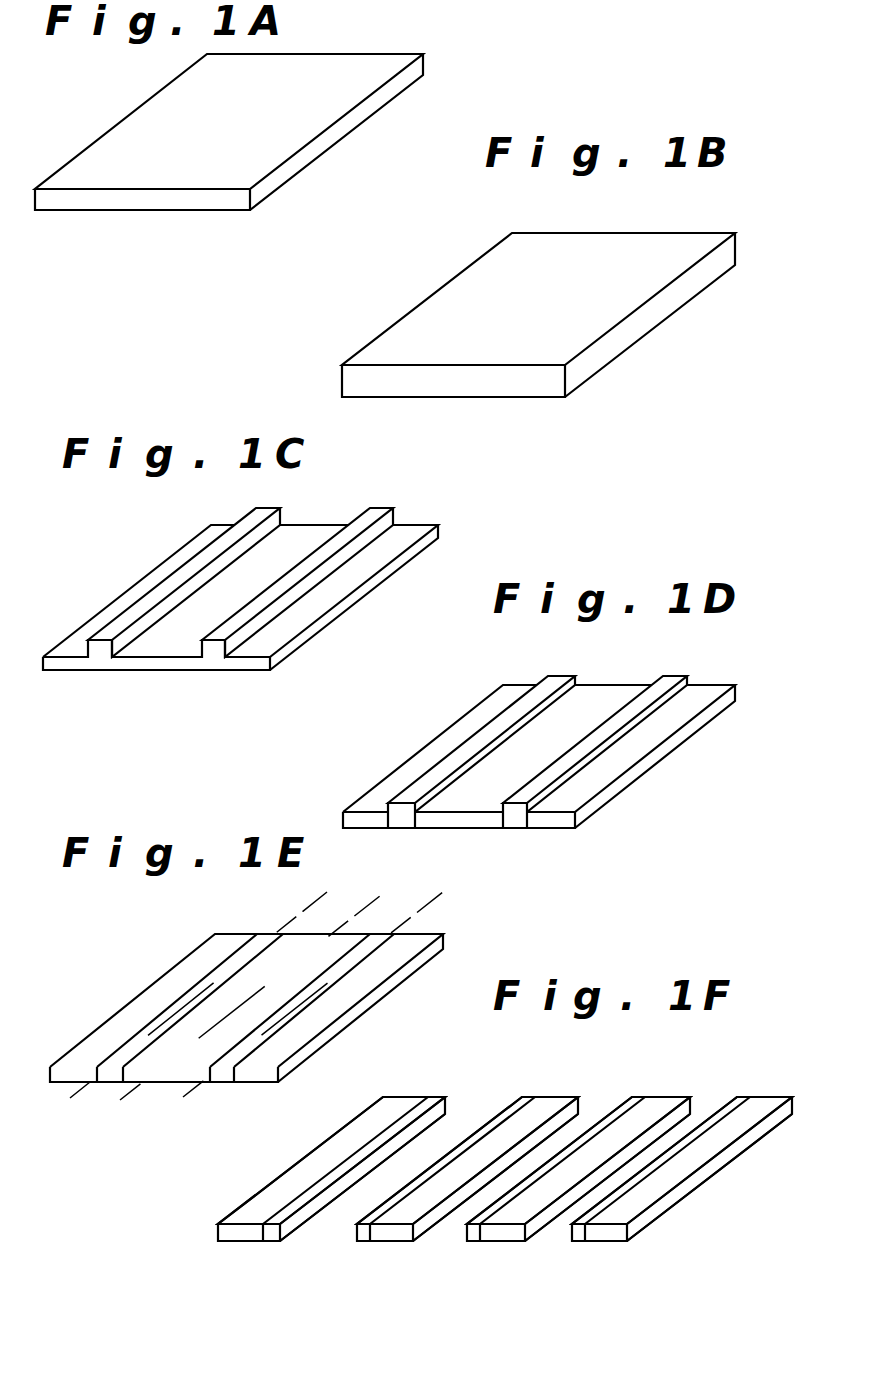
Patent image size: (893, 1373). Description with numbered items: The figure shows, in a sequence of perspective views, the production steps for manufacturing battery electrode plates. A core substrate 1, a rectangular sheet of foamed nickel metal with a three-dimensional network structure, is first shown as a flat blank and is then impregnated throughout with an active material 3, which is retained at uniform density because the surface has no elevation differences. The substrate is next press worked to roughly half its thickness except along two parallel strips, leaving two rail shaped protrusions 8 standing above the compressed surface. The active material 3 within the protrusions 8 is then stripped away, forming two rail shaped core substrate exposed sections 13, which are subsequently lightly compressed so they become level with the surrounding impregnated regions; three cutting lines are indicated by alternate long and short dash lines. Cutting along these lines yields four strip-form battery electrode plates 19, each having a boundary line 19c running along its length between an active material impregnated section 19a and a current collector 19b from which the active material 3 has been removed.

In FIG. 1A, the core substrate 1 is at (323, 105).
In FIG. 1B, the core substrate 1 is at (600, 310).
In FIG. 1C, the core substrate 1 is at (403, 567).
In FIG. 1D, the core substrate 1 is at (610, 802).
In FIG. 1E, the core substrate 1 is at (343, 1020).
In FIG. 1B, the active material 3 is at (643, 253).
In FIG. 1C, the active material 3 is at (302, 545).
In FIG. 1D, the active material 3 is at (450, 737).
In FIG. 1E, the active material 3 is at (227, 942).
In FIG. 1C, the rail shaped protrusions 8 is at (182, 577).
In FIG. 1D, the core substrate exposed sections 13 is at (493, 732).
In FIG. 1E, the core substrate exposed sections 13 is at (210, 980).
In FIG. 1F, the battery electrode plates 19 is at (442, 1084).
In FIG. 1F, the active material impregnated section 19a is at (312, 1163).
In FIG. 1F, the current collector 19b is at (307, 1215).
In FIG. 1F, the boundary line 19c is at (363, 1142).